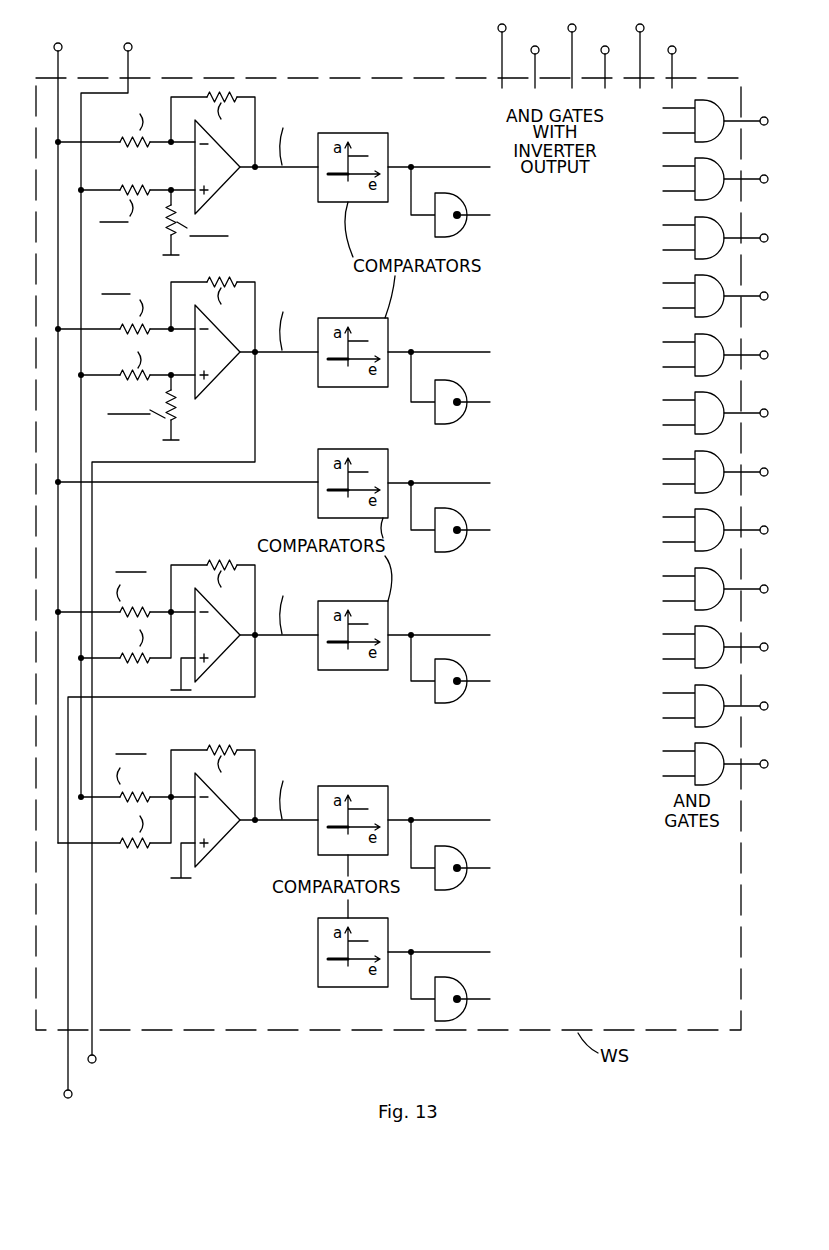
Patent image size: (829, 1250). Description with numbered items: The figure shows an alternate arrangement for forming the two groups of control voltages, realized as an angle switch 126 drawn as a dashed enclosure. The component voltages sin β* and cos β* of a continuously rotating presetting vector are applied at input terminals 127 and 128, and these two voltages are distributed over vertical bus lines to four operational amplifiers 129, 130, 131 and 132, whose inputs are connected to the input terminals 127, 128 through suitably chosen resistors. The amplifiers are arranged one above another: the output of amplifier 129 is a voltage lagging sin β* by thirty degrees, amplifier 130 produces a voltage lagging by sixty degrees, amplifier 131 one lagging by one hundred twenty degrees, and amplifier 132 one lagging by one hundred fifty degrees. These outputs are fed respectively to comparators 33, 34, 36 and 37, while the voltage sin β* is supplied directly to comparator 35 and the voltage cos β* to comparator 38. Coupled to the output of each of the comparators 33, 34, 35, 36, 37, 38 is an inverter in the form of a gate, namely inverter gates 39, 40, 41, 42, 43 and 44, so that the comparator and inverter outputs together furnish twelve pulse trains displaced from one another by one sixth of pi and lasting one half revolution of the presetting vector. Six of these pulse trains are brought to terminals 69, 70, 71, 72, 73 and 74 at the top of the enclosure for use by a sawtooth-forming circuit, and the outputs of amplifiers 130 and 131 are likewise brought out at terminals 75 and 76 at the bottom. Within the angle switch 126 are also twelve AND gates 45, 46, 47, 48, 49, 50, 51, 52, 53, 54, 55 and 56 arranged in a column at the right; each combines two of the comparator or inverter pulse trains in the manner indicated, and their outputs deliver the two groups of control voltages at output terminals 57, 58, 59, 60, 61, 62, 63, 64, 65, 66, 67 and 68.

The angle switch 126 is at (283, 56).
The input terminal 127 is at (57, 36).
The input terminal 128 is at (130, 36).
The operational amplifier 129 is at (219, 184).
The operational amplifier 130 is at (214, 380).
The operational amplifier 131 is at (214, 664).
The operational amplifier 132 is at (214, 849).
The comparator 33 is at (318, 191).
The comparator 34 is at (318, 376).
The comparator 35 is at (318, 507).
The comparator 36 is at (318, 659).
The comparator 37 is at (318, 844).
The comparator 38 is at (318, 976).
The inverter gate 39 is at (435, 227).
The inverter gate 40 is at (435, 414).
The inverter gate 41 is at (435, 542).
The inverter gate 42 is at (435, 693).
The inverter gate 43 is at (435, 880).
The inverter gate 44 is at (435, 1011).
The AND gate 45 is at (705, 106).
The AND gate 46 is at (705, 164).
The AND gate 47 is at (705, 223).
The AND gate 48 is at (705, 281).
The AND gate 49 is at (705, 340).
The AND gate 50 is at (705, 398).
The AND gate 51 is at (705, 457).
The AND gate 52 is at (705, 515).
The AND gate 53 is at (705, 574).
The AND gate 54 is at (705, 632).
The AND gate 55 is at (705, 691).
The AND gate 56 is at (705, 749).
The output terminal 57 is at (758, 114).
The output terminal 58 is at (758, 172).
The output terminal 59 is at (758, 231).
The output terminal 60 is at (758, 289).
The output terminal 61 is at (758, 348).
The output terminal 62 is at (758, 406).
The output terminal 63 is at (758, 465).
The output terminal 64 is at (758, 523).
The output terminal 65 is at (758, 582).
The output terminal 66 is at (758, 640).
The output terminal 67 is at (758, 699).
The output terminal 68 is at (758, 757).
The terminal 69 is at (502, 47).
The terminal 70 is at (536, 57).
The terminal 71 is at (574, 47).
The terminal 72 is at (607, 57).
The terminal 73 is at (642, 47).
The terminal 74 is at (680, 57).
The terminal 75 is at (113, 1103).
The terminal 76 is at (145, 1061).